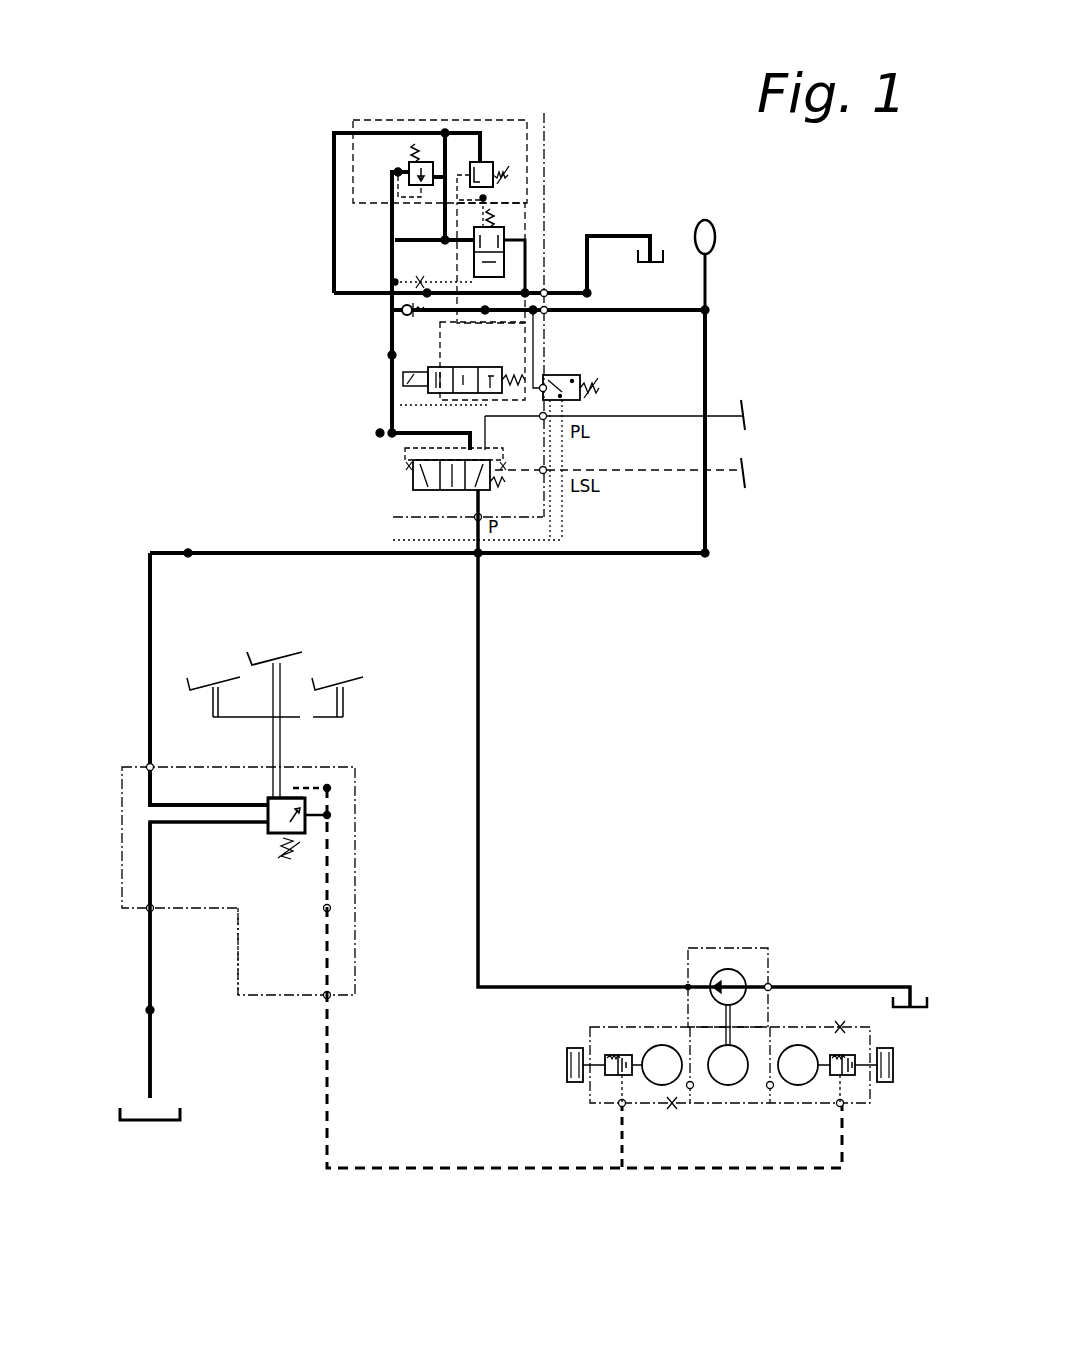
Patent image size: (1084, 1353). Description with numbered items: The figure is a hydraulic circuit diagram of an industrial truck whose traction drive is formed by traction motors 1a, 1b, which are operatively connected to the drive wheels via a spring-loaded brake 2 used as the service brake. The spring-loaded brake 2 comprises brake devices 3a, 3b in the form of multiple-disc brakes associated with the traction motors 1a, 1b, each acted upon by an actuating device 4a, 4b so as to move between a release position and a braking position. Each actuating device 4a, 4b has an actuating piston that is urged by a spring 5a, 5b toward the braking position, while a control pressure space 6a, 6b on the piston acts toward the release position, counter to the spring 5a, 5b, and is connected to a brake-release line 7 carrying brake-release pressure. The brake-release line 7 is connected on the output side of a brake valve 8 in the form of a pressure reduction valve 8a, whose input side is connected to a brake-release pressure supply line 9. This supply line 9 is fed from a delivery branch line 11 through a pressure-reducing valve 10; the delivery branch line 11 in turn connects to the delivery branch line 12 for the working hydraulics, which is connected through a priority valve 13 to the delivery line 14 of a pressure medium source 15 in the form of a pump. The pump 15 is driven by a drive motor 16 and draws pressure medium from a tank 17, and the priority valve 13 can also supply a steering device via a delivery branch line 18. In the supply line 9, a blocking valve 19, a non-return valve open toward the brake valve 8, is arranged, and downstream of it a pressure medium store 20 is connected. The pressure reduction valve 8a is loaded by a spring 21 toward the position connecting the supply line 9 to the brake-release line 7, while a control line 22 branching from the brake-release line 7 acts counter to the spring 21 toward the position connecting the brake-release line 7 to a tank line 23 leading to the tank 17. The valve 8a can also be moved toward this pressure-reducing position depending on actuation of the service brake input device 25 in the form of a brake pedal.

The traction motor 1a is at (672, 1067).
The traction motor 1b is at (805, 1067).
The spring-loaded brake 2 is at (585, 1108).
The brake device 3a is at (567, 1062).
The brake device 3b is at (888, 1085).
The actuating device 4a is at (606, 1052).
The actuating device 4b is at (843, 1058).
The spring 5a is at (608, 1075).
The spring 5b is at (855, 1058).
The control pressure space 6a is at (615, 1060).
The control pressure space 6b is at (838, 1050).
The brake-release line 7 is at (327, 1150).
The brake valve 8 is at (246, 845).
The pressure reduction valve 8a is at (280, 830).
The brake-release pressure supply line 9 is at (188, 553).
The pressure-reducing valve 10 is at (398, 160).
The delivery branch line 11 is at (393, 356).
The delivery branch line 12 is at (382, 433).
The priority valve 13 is at (407, 492).
The delivery line 14 is at (480, 695).
The pressure medium source 15 is at (723, 968).
The drive motor 16 is at (718, 1068).
The tank 17 is at (922, 987).
The delivery branch line 18 is at (638, 412).
The blocking valve 19 is at (402, 315).
The pressure medium store 20 is at (715, 243).
The spring 21 is at (290, 862).
The control line 22 is at (329, 786).
The tank line 23 is at (150, 1010).
The service brake input device 25 is at (262, 663).